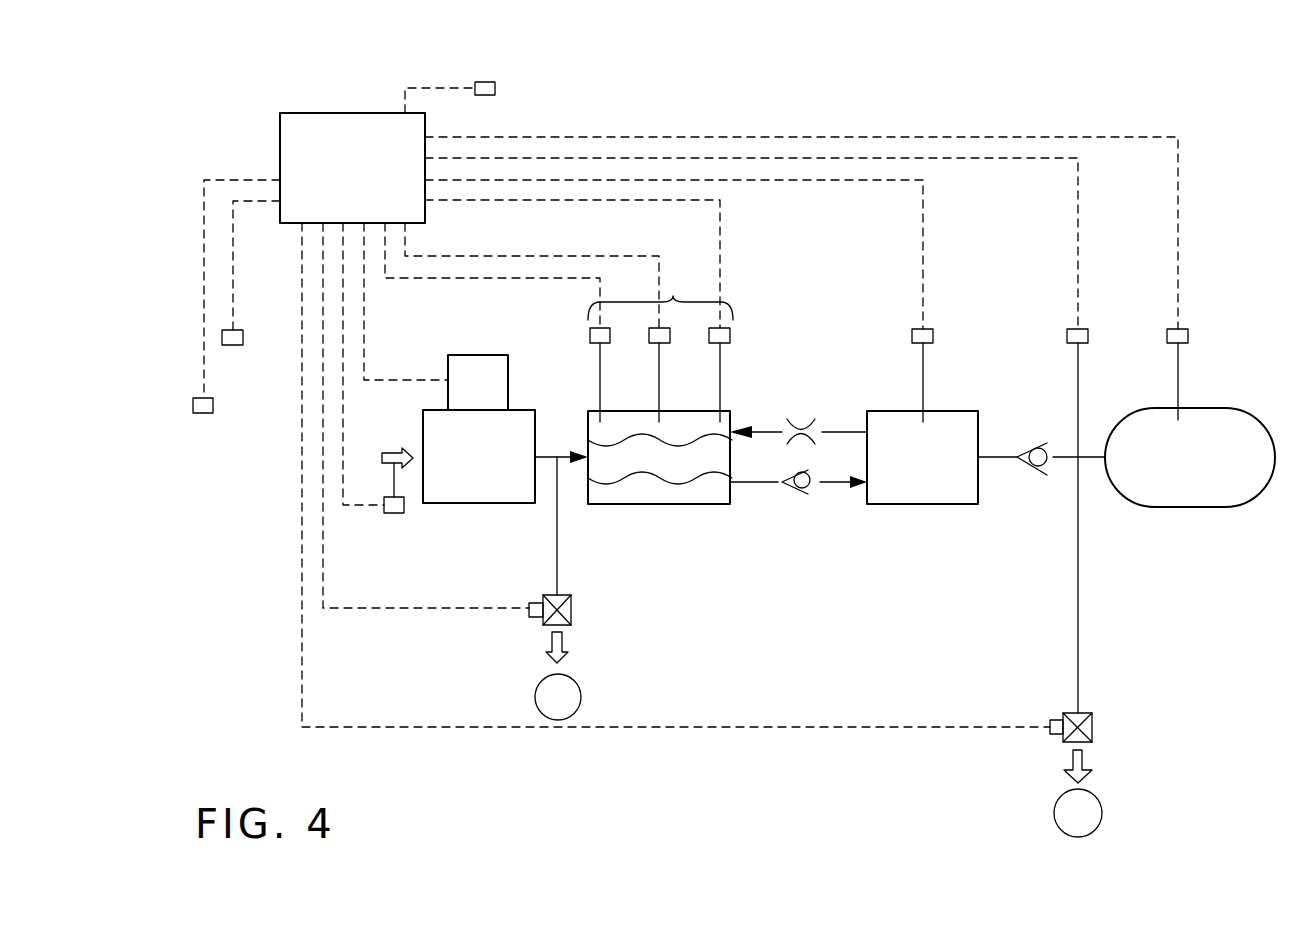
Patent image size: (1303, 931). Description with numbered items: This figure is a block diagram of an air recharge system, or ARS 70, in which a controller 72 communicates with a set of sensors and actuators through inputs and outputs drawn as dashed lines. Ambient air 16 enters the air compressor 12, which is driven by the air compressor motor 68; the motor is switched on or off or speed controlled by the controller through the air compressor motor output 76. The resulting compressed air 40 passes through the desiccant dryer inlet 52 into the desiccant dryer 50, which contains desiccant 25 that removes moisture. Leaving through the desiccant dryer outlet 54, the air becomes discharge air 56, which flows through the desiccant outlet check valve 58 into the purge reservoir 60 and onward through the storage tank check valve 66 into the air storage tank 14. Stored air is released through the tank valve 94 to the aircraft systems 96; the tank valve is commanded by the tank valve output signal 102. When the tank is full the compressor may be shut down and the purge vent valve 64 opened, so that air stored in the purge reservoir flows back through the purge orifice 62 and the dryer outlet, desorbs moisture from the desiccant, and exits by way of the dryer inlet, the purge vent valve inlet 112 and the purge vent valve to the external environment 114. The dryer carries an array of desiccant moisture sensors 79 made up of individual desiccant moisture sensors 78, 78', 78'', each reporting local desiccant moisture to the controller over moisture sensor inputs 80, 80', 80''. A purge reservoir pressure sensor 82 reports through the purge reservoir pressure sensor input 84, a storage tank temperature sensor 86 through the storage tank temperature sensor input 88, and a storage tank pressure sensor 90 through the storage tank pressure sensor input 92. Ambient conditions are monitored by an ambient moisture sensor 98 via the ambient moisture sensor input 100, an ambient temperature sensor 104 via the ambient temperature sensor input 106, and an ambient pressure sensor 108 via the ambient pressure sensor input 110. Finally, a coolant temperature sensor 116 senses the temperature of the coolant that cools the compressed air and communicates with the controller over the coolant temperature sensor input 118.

The air compressor 12 is at (484, 508).
The air storage tank 14 is at (1192, 467).
The ambient air 16 is at (410, 450).
The desiccant 25 is at (638, 490).
The compressed air 40 is at (545, 460).
The desiccant dryer 50 is at (665, 505).
The desiccant dryer inlet 52 is at (587, 455).
The desiccant dryer outlet 54 is at (733, 430).
The discharge air 56 is at (855, 432).
The desiccant outlet check valve 58 is at (808, 498).
The purge reservoir 60 is at (908, 470).
The purge orifice 62 is at (793, 425).
The purge vent valve 64 is at (572, 610).
The storage tank check valve 66 is at (1027, 447).
The air compressor motor 68 is at (463, 393).
The air recharge system 70 is at (872, 78).
The controller 72 is at (338, 182).
The air compressor motor output 76 is at (432, 380).
The desiccant moisture sensor 78 is at (571, 375).
The desiccant moisture sensor 78' is at (637, 375).
The desiccant moisture sensor 78'' is at (750, 375).
The array of desiccant moisture sensors 79 is at (673, 298).
The moisture sensor input 80 is at (492, 275).
The moisture sensor input 80' is at (532, 270).
The moisture sensor input 80'' is at (624, 264).
The purge reservoir pressure sensor 82 is at (933, 338).
The purge reservoir pressure sensor input 84 is at (923, 255).
The storage tank temperature sensor 86 is at (1178, 358).
The storage tank temperature sensor input 88 is at (1180, 238).
The storage tank pressure sensor 90 is at (1088, 336).
The storage tank pressure sensor input 92 is at (1078, 225).
The tank valve 94 is at (1092, 730).
The aircraft systems 96 is at (1078, 813).
The ambient moisture sensor 98 is at (393, 513).
The ambient moisture sensor input 100 is at (360, 507).
The tank valve output signal 102 is at (835, 727).
The ambient temperature sensor 104 is at (232, 345).
The ambient temperature sensor input 106 is at (235, 257).
The ambient pressure sensor 108 is at (213, 405).
The ambient pressure sensor input 110 is at (262, 177).
The purge vent valve inlet 112 is at (571, 597).
The external environment 114 is at (558, 697).
The coolant temperature sensor 116 is at (495, 88).
The coolant temperature sensor input 118 is at (404, 85).